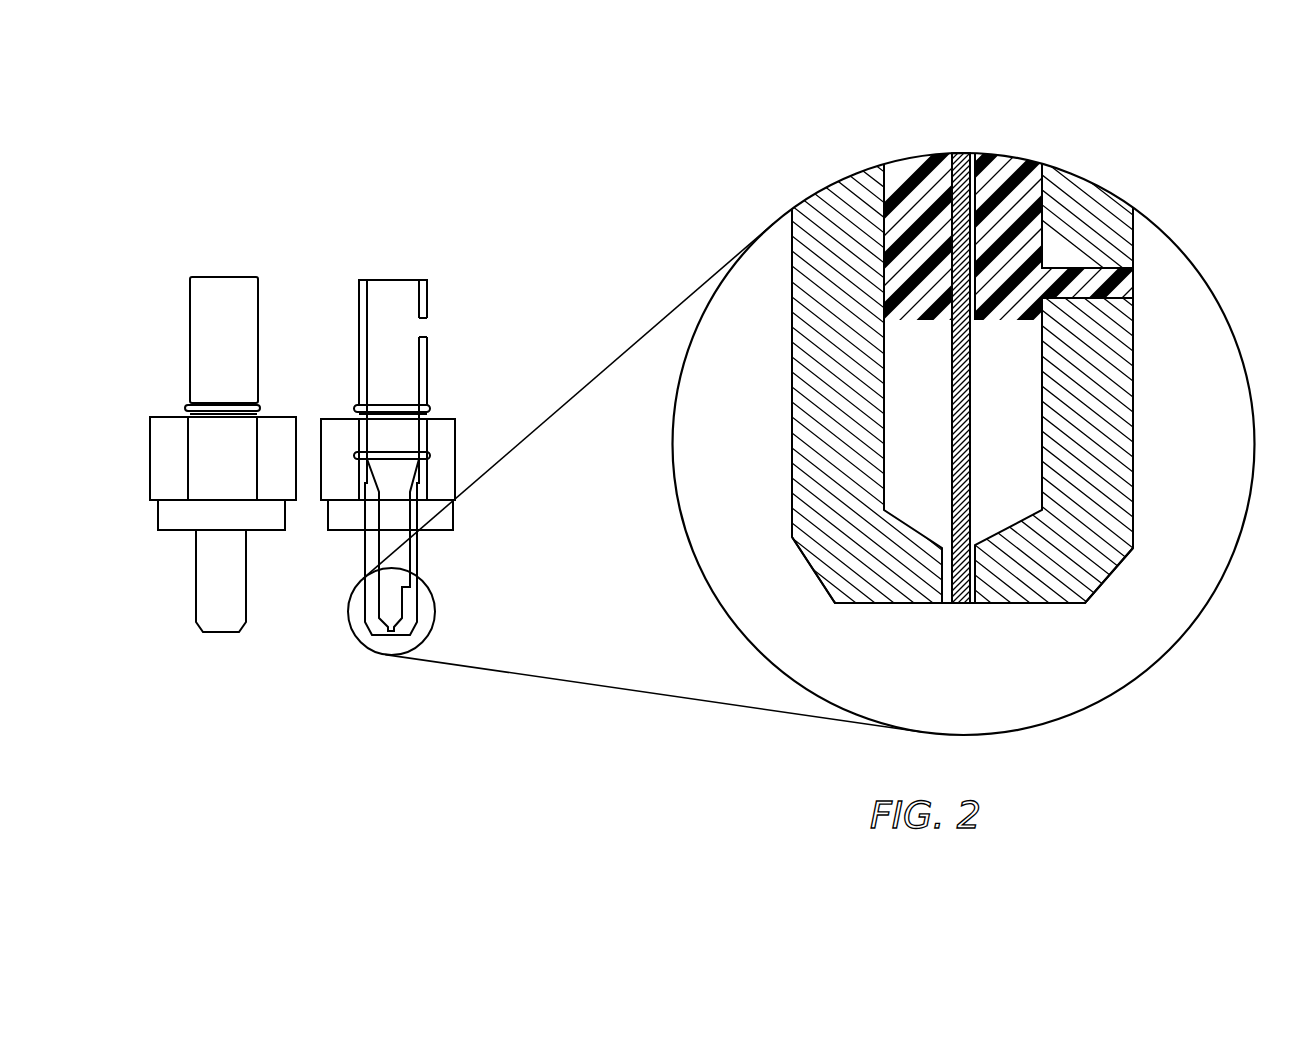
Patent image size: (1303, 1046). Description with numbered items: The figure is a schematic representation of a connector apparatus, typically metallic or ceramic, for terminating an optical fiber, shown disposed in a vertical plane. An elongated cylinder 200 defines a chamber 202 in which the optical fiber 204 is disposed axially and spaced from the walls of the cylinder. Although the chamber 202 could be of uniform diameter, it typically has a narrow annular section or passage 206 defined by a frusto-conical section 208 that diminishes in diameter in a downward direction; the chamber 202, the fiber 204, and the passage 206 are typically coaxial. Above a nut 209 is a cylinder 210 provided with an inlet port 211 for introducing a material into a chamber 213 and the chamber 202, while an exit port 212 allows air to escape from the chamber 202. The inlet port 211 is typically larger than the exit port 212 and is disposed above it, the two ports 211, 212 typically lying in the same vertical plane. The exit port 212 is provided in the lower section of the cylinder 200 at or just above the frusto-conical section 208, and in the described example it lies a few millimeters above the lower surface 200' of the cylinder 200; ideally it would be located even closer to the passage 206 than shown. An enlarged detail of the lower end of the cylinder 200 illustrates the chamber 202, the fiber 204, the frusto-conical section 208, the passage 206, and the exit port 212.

The elongated cylinder 200 is at (852, 352).
The lower surface of cylinder 200 200' is at (867, 621).
The chamber 202 is at (903, 167).
The optical fiber 204 is at (964, 152).
The narrow annular section or passage 206 is at (969, 604).
The frusto-conical section 208 is at (1043, 570).
The nut 209 is at (450, 436).
The cylinder 210 is at (359, 299).
The inlet port 211 is at (424, 323).
The exit port 212 is at (1120, 285).
The chamber 213 is at (390, 295).